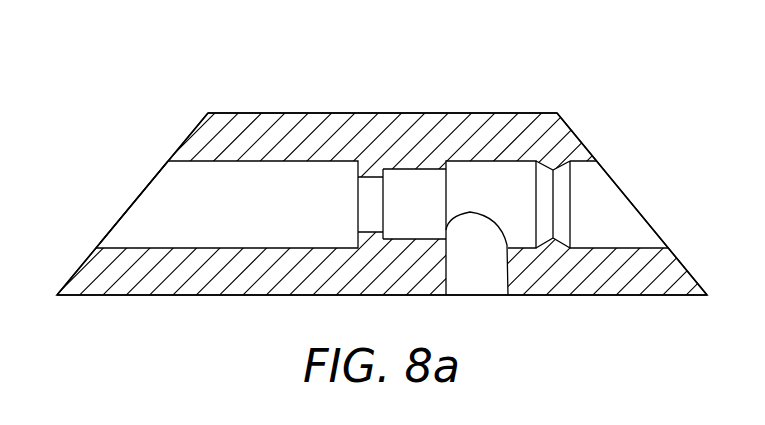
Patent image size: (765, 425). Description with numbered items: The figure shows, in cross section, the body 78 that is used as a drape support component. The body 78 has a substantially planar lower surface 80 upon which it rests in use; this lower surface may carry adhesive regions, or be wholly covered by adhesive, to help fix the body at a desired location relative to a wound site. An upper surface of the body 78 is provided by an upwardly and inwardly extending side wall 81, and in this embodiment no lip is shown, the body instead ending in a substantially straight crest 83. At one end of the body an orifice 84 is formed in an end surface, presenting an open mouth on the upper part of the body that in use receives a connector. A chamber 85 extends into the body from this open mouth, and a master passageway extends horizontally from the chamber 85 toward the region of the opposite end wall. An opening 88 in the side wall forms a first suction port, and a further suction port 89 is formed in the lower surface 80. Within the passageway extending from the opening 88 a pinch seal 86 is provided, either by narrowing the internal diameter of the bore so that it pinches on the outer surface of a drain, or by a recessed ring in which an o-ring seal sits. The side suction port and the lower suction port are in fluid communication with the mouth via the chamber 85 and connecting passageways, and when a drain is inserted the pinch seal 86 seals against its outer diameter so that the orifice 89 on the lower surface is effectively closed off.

The body 78 is at (614, 96).
The lower surface 80 is at (173, 296).
The side wall 81 is at (74, 271).
The crest 83 is at (500, 113).
The orifice 84 is at (116, 184).
The chamber 85 is at (265, 214).
The pinch seal 86 is at (553, 166).
The opening 88 is at (659, 193).
The further suction port 89 is at (484, 310).